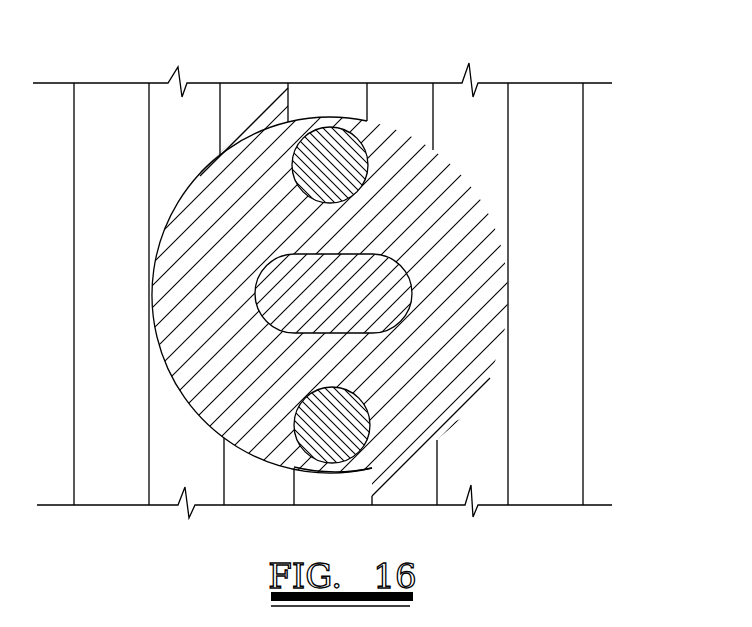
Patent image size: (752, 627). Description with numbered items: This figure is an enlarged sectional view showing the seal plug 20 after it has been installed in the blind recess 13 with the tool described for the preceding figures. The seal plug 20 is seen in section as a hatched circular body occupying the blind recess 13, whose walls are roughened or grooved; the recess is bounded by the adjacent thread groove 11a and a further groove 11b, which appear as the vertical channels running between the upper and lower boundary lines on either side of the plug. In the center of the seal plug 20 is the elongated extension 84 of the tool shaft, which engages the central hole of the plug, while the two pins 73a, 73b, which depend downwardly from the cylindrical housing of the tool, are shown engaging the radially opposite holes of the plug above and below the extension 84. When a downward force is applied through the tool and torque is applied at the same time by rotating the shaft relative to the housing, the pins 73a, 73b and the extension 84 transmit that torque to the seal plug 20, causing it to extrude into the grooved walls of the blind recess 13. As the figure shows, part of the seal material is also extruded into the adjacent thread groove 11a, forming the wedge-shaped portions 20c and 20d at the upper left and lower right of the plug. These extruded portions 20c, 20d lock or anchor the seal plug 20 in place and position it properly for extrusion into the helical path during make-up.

The thread groove 11a is at (168, 100).
The second groove 11b is at (342, 98).
The blind recess 13 is at (483, 353).
The seal plug 20 is at (478, 312).
The extruded portion of seal plug 20c is at (266, 115).
The extruded portion of seal plug 20d is at (372, 478).
The pin 73a is at (340, 430).
The pin 73b is at (347, 167).
The extension 84 is at (362, 297).